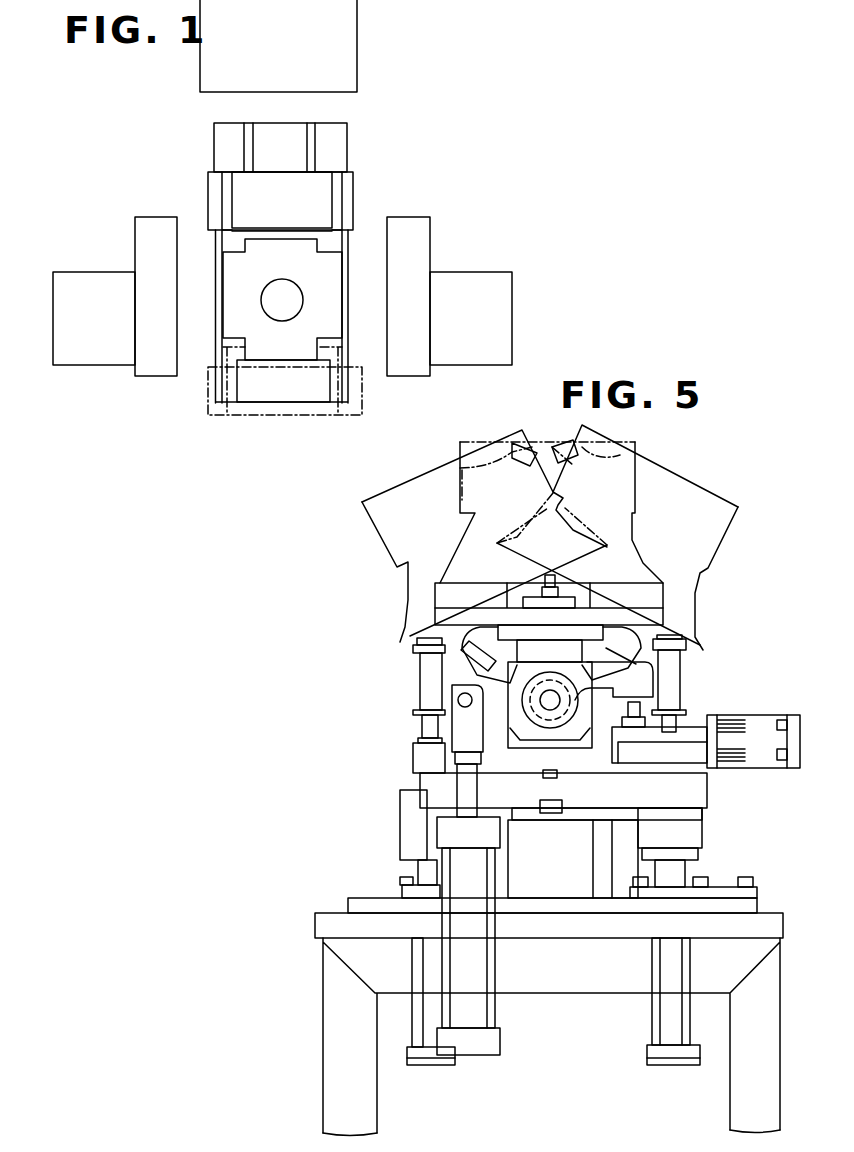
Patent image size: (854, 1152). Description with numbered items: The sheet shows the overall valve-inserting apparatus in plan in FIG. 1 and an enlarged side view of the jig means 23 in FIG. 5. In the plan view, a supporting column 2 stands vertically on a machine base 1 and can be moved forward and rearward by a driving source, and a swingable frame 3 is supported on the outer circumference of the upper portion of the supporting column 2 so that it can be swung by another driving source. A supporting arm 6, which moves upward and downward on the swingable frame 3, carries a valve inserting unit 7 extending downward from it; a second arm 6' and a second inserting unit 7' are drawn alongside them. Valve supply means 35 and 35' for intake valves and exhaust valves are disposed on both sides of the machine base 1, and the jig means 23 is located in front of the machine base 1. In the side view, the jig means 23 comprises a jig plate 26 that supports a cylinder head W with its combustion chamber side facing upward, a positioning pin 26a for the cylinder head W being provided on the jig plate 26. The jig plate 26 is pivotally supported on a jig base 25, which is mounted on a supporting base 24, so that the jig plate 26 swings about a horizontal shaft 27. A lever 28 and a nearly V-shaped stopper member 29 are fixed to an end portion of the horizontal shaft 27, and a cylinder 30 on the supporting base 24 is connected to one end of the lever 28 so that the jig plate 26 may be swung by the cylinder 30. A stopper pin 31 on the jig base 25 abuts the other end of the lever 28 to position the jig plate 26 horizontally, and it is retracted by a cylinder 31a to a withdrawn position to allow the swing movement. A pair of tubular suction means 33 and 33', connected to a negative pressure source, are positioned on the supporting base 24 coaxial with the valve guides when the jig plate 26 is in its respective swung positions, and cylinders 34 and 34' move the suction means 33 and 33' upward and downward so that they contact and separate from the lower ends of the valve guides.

In FIG. 1, the jig means 23 is at (350, 58).
In FIG. 5, the jig means 23 is at (353, 663).
In FIG. 1, the valve inserting unit 7 is at (304, 263).
In FIG. 1, the supporting arm 6 is at (254, 189).
In FIG. 1, the swingable frame 3 is at (328, 325).
In FIG. 1, the supporting column 2 is at (280, 307).
In FIG. 1, the machine base 1 is at (247, 377).
In FIG. 1, the lower tool 6' is at (259, 391).
In FIG. 1, the lower tool holder 7' is at (285, 423).
In FIG. 1, the valve supply means 35 is at (115, 277).
In FIG. 1, the valve supply means 35' is at (449, 283).
In FIG. 5, the cylinder head W is at (387, 522).
In FIG. 5, the positioning pin 26a is at (552, 572).
In FIG. 5, the jig plate 26 is at (662, 618).
In FIG. 5, the stopper member 29 is at (630, 640).
In FIG. 5, the lever 28 is at (643, 680).
In FIG. 5, the horizontal shaft 27 is at (548, 700).
In FIG. 5, the tubular suction means 33' is at (393, 705).
In FIG. 5, the tubular suction means 33 is at (693, 683).
In FIG. 5, the stopper pin 31 is at (642, 708).
In FIG. 5, the cylinder 31a is at (791, 770).
In FIG. 5, the jig base 25 is at (698, 792).
In FIG. 5, the cylinder 34 is at (647, 936).
In FIG. 5, the cylinder 34' is at (443, 1025).
In FIG. 5, the cylinder 30 is at (487, 1047).
In FIG. 5, the supporting base 24 is at (328, 1050).